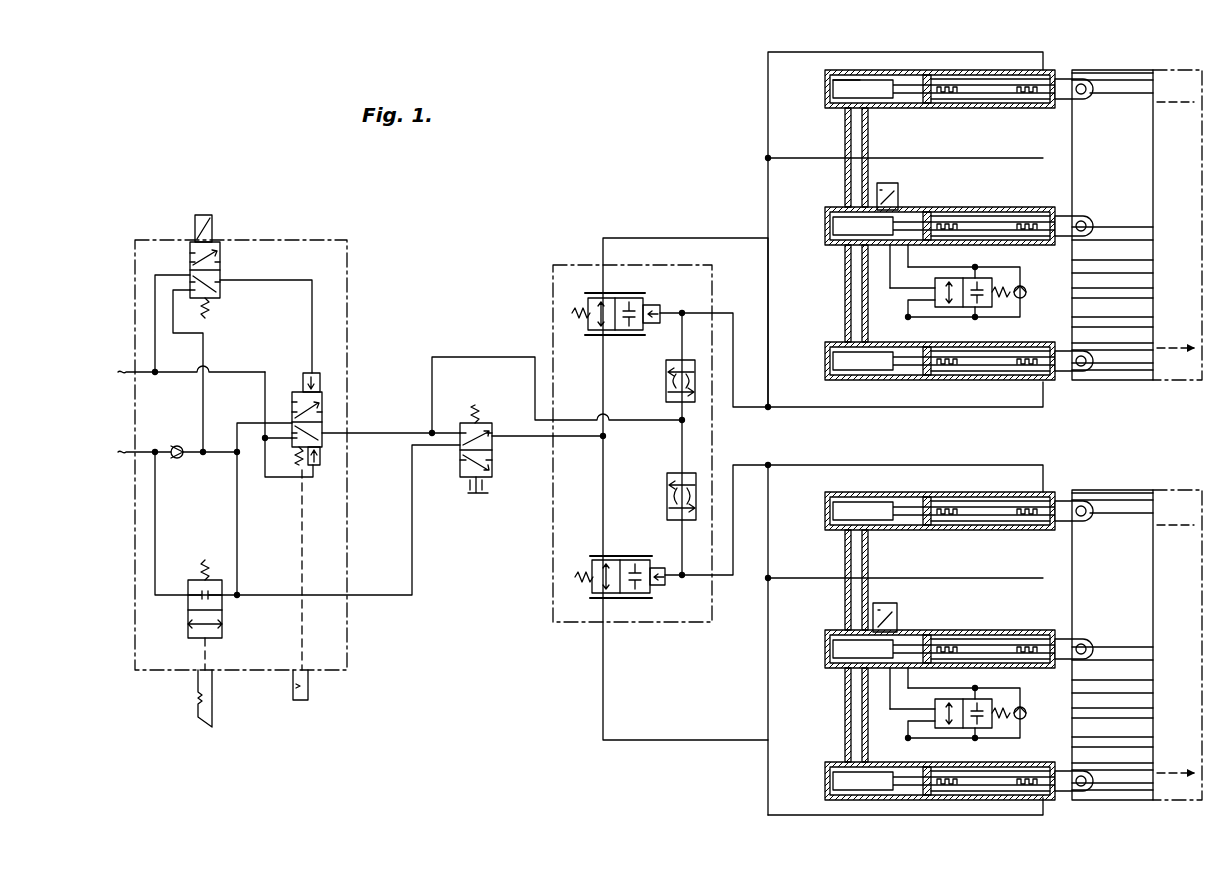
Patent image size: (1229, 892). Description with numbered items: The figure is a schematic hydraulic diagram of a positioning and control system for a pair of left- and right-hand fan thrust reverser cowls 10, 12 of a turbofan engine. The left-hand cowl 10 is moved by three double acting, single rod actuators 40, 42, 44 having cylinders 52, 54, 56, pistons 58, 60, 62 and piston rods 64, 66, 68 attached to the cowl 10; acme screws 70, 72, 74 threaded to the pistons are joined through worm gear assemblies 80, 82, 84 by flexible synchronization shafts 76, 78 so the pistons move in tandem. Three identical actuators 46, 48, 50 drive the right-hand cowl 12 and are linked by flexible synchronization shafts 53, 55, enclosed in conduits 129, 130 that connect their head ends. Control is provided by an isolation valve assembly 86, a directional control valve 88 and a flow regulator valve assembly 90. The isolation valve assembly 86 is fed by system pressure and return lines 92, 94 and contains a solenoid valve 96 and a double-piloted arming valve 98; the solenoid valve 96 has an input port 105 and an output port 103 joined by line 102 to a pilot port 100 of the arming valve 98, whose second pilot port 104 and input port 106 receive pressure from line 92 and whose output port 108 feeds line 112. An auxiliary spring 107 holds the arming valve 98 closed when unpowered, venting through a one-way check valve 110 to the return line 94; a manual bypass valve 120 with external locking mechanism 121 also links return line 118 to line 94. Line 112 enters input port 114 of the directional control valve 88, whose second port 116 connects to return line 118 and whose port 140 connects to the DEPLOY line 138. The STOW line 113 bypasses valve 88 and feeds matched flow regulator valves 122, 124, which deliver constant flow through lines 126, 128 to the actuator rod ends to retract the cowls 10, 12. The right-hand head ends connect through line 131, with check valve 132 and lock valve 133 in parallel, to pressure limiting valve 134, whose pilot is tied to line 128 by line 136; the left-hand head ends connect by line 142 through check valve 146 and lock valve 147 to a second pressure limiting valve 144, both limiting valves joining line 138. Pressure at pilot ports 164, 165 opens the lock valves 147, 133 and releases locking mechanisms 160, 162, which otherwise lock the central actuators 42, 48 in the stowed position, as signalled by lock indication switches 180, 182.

The left-hand fan thrust reverser cowl 10 is at (1138, 172).
The right-hand fan thrust reverser cowl 12 is at (1142, 600).
The hydraulic actuator 40 is at (822, 100).
The hydraulic actuator 42 is at (832, 203).
The hydraulic actuator 44 is at (822, 360).
The hydraulic actuator 46 is at (822, 510).
The hydraulic actuator 48 is at (832, 626).
The hydraulic actuator 50 is at (822, 780).
The cylinder 52 is at (906, 112).
The flexible synchronization shaft 53 is at (850, 546).
The cylinder 54 is at (922, 215).
The flexible synchronization shaft 55 is at (846, 700).
The cylinder 56 is at (898, 384).
The piston 58 is at (928, 112).
The piston 60 is at (958, 208).
The piston 62 is at (934, 384).
The piston rod 64 is at (1062, 104).
The piston rod 66 is at (1062, 222).
The piston rod 68 is at (1064, 364).
The acme screw 70 is at (1004, 94).
The acme screw 72 is at (1010, 224).
The acme screw 74 is at (1018, 364).
The flexible synchronization shaft 76 is at (850, 136).
The flexible synchronization shaft 78 is at (846, 296).
The worm gear assembly 80 is at (856, 72).
The worm gear assembly 82 is at (846, 250).
The worm gear assembly 84 is at (852, 384).
The isolation valve assembly 86 is at (300, 238).
The directional control valve 88 is at (488, 478).
The flow regulator valve assembly 90 is at (553, 608).
The system pressure line 92 is at (122, 368).
The system return line 94 is at (122, 454).
The solenoid valve 96 is at (224, 252).
The arming valve 98 is at (324, 406).
The pilot port 100 is at (303, 376).
The hydraulic line 102 is at (312, 320).
The output port 103 is at (220, 280).
The second pilot port 104 is at (336, 462).
The input port 105 is at (188, 272).
The input port 106 is at (292, 440).
The auxiliary bias spring 107 is at (305, 460).
The output port 108 is at (322, 424).
The one-way check valve 110 is at (173, 447).
The hydraulic line 112 is at (420, 381).
The hydraulic pressure line (STOW) 113 is at (535, 356).
The input port 114 is at (458, 421).
The second port 116 is at (462, 458).
The hydraulic return line 118 is at (412, 554).
The manual bypass valve 120 is at (182, 618).
The external locking mechanism 121 is at (198, 702).
The flow regulator valve 122 is at (666, 376).
The flow regulator valve 124 is at (666, 498).
The hydraulic line 126 is at (733, 326).
The hydraulic line 128 is at (734, 564).
The conduit 129 is at (842, 566).
The conduit 130 is at (846, 720).
The hydraulic line 131 is at (604, 706).
The one-way check valve 132 is at (1022, 718).
The lock valve 133 is at (1000, 736).
The pressure limiting valve 134 is at (592, 592).
The hydraulic line 136 is at (664, 578).
The hydraulic line (DEPLOY) 138 is at (590, 446).
The port 140 is at (498, 424).
The hydraulic line 142 is at (646, 242).
The pressure limiting valve 144 is at (628, 298).
The check valve 146 is at (1026, 292).
The lock valve 147 is at (1000, 312).
The mechanical locking mechanism 160 is at (920, 207).
The mechanical locking mechanism 162 is at (850, 666).
The pilot port 164 is at (932, 302).
The pilot port 165 is at (932, 722).
The lock indication switch 180 is at (900, 176).
The lock indication switch 182 is at (898, 604).